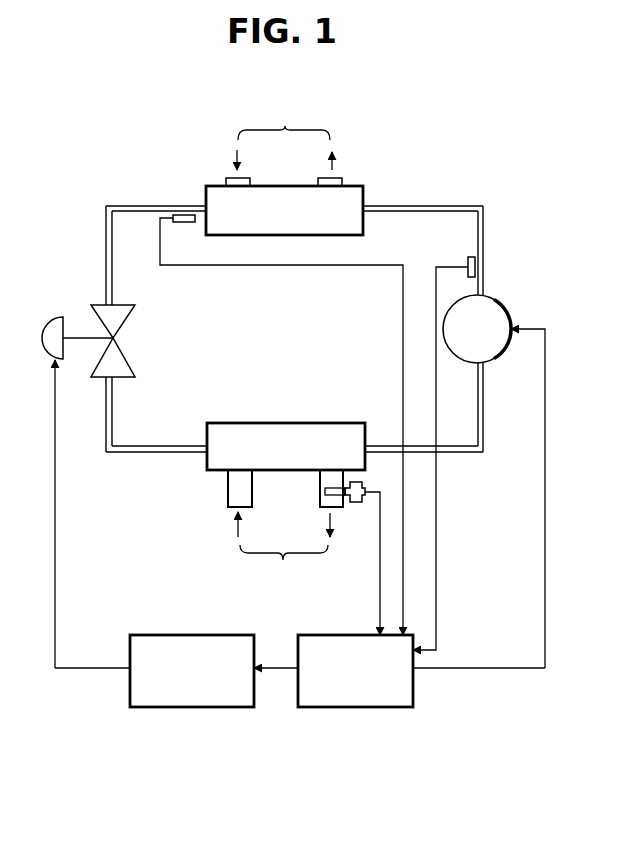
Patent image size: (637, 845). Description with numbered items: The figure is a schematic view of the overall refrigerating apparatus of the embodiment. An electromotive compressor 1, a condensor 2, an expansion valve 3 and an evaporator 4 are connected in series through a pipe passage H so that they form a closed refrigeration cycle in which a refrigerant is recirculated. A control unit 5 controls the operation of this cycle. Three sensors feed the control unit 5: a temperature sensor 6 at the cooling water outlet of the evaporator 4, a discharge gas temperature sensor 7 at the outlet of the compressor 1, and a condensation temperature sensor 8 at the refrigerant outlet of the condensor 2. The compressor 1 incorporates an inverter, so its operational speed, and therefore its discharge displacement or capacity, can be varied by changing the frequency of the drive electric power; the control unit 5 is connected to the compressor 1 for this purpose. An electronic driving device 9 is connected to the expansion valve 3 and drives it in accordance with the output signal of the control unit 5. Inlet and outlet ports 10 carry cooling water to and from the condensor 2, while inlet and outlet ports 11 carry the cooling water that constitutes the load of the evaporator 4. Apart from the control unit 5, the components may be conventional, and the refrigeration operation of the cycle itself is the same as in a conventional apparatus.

The electromotive compressor 1 is at (500, 301).
The condensor 2 is at (357, 198).
The expansion valve 3 is at (120, 325).
The evaporator 4 is at (272, 428).
The control unit 5 is at (345, 698).
The temperature sensor 6 is at (363, 485).
The discharge gas temperature sensor 7 is at (468, 253).
The condensation temperature sensor 8 is at (182, 222).
The electronic driving device 9 is at (187, 698).
The inlet and outlet ports 10 is at (285, 126).
The inlet and outlet ports 11 is at (283, 561).
The pipe passage H is at (428, 207).